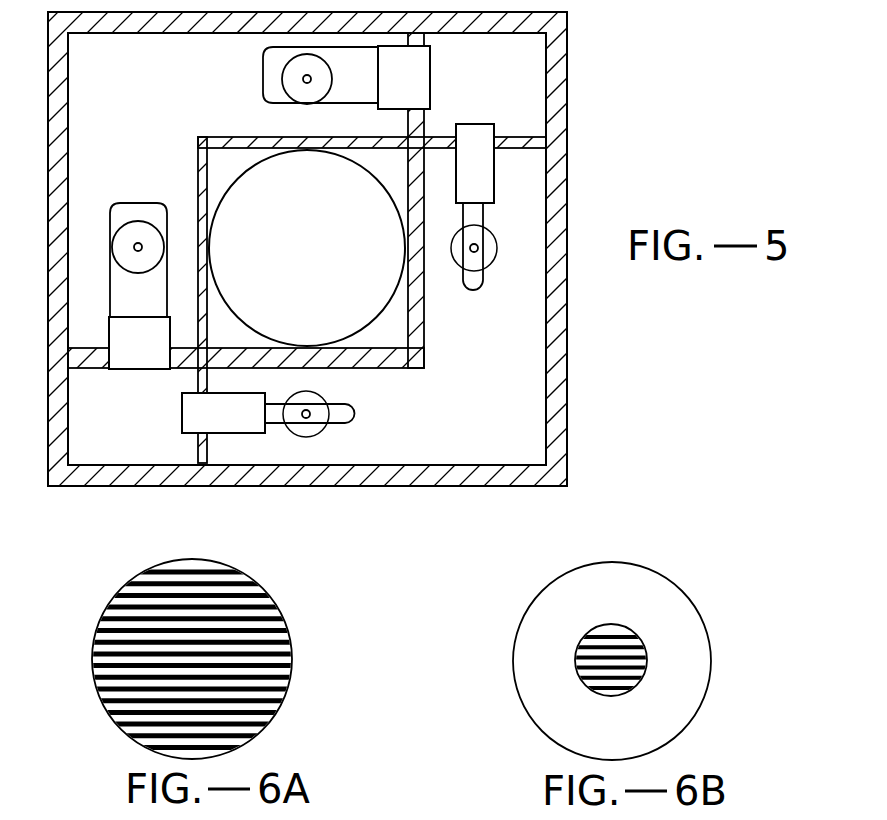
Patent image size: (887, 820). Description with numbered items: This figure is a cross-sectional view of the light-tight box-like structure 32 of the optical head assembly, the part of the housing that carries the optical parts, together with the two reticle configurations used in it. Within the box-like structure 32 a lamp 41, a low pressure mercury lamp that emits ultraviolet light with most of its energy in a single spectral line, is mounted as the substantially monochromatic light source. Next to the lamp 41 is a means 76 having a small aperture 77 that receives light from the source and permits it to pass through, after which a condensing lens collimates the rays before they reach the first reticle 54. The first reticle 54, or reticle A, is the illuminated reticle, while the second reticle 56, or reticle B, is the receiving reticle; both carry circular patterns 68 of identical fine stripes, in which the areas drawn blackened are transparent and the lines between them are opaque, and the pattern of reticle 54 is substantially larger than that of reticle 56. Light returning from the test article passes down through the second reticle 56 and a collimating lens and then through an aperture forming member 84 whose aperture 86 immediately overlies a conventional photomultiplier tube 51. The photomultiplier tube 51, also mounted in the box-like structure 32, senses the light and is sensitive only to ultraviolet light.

In FIG. 5, the box-like structure 32 is at (575, 139).
In FIG. 5, the photomultiplier tube 51 is at (268, 78).
In FIG. 5, the aperture forming member 84 is at (298, 92).
In FIG. 5, the aperture 86 is at (310, 83).
In FIG. 5, the aperture means 76 is at (490, 238).
In FIG. 5, the aperture 77 is at (479, 250).
In FIG. 5, the lamp 41 is at (477, 291).
In FIG. 6A, the circular pattern of stripes 68 is at (260, 605).
In FIG. 6B, the circular pattern of stripes 68 is at (615, 628).
In FIG. 6A, the first reticle 54 is at (130, 695).
In FIG. 6B, the second reticle 56 is at (693, 658).